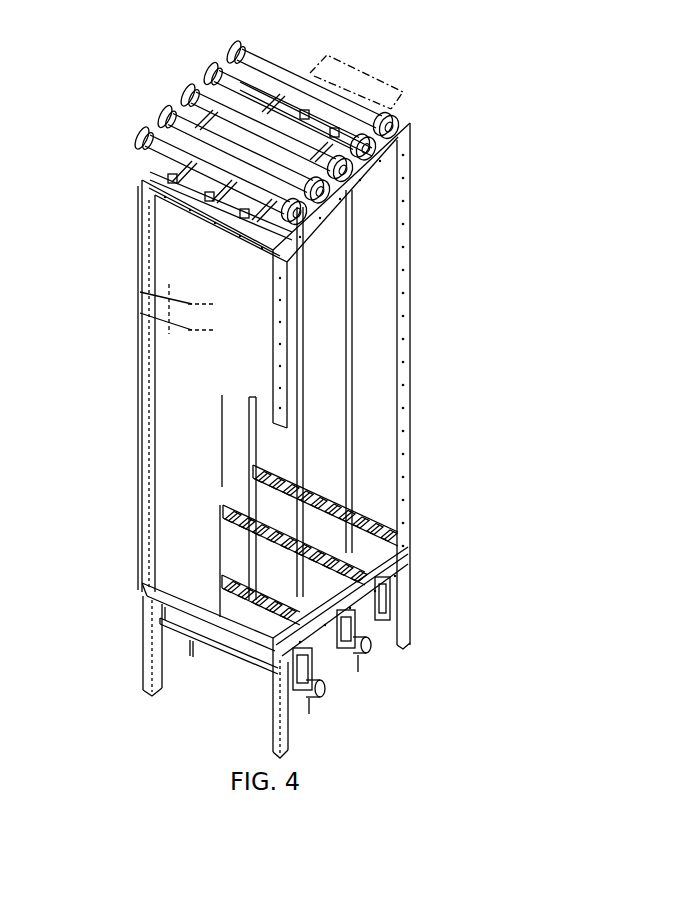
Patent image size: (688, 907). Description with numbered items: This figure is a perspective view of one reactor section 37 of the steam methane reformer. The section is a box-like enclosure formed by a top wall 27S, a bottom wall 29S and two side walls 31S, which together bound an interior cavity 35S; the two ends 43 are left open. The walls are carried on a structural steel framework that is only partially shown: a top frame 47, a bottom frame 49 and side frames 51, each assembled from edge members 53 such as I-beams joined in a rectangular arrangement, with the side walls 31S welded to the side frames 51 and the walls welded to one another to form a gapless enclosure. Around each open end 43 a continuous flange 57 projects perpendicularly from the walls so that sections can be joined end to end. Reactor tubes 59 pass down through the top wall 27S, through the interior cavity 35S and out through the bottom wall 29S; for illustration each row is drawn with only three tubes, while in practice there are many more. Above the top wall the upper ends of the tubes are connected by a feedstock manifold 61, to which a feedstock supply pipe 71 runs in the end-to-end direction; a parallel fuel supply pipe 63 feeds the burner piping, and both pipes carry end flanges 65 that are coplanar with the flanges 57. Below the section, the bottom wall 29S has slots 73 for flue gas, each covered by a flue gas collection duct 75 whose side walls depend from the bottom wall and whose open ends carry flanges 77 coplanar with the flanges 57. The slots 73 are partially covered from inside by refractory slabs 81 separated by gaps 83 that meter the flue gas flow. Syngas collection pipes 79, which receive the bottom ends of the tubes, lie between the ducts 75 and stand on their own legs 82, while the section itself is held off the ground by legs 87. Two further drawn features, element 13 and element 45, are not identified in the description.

The roller tray unit 13 is at (158, 506).
The top wall 27S is at (205, 200).
The bottom wall 29S is at (362, 560).
The side walls 31S is at (380, 337).
The interior cavity 35S is at (378, 262).
The reactor section 37 is at (148, 237).
The ends 43 is at (376, 192).
The frame cross member 45 is at (257, 672).
The top frame 47 is at (150, 175).
The bottom frame 49 is at (163, 602).
The side frames 51 is at (152, 528).
The edge members 53 is at (205, 205).
The flanges 57 is at (142, 183).
The reactor tubes 59 is at (255, 478).
The feedstock manifold 61 is at (165, 165).
The fuel supply pipe 63 is at (253, 62).
The end flanges 65 is at (378, 148).
The feedstock supply pipe 71 is at (275, 95).
The slots 73 is at (258, 628).
The flue gas collection duct 75 is at (312, 688).
The flange 77 is at (313, 665).
The syngas collection pipes 79 is at (303, 700).
The refractory slabs 81 is at (262, 618).
The legs 82 is at (310, 713).
The gaps 83 is at (245, 476).
The legs 87 is at (147, 653).